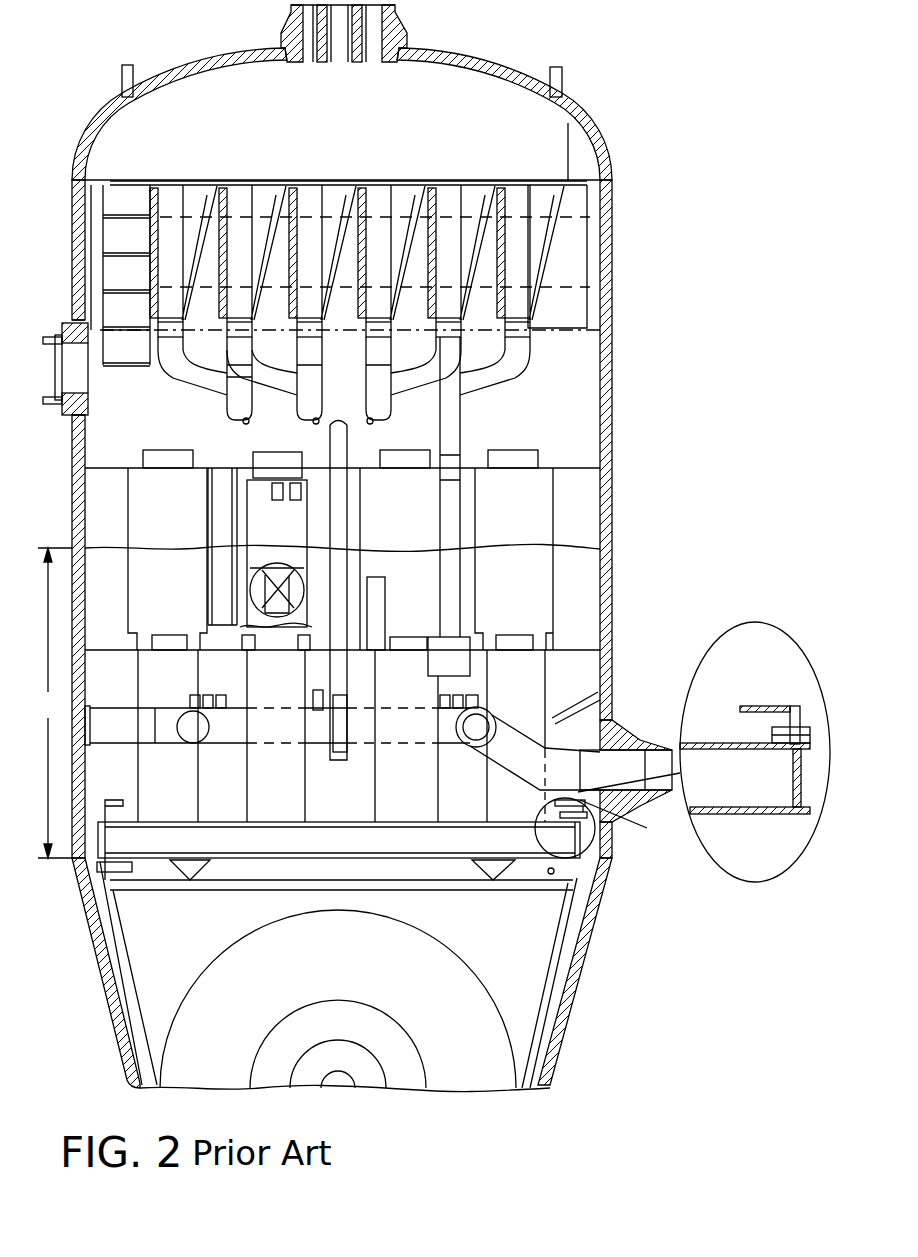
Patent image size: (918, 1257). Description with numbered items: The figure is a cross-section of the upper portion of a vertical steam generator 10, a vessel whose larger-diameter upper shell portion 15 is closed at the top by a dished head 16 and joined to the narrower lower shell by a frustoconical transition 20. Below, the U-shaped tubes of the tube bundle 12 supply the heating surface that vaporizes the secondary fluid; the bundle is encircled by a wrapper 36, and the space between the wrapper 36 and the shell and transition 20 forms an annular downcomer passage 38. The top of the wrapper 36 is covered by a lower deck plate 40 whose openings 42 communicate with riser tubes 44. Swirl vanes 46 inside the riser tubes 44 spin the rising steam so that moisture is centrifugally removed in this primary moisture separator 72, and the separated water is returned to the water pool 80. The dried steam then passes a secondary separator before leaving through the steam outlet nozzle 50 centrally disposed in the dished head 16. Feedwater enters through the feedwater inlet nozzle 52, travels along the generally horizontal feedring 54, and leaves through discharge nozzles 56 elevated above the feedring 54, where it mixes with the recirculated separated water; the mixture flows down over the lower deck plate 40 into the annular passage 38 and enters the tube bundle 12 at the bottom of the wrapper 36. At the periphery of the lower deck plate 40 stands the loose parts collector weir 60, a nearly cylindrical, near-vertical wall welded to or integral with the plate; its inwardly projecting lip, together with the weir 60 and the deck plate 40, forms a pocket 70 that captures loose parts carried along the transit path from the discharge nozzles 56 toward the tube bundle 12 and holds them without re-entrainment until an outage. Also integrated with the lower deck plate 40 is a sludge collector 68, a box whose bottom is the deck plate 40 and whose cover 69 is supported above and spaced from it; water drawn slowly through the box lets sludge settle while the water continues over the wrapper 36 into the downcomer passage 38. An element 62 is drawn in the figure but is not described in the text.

The steam generator 10 is at (393, 431).
The tube bundle 12 is at (468, 956).
The upper shell portion 15 is at (612, 503).
The dished head 16 is at (487, 62).
The frustoconical transition 20 is at (590, 965).
The wrapper 36 is at (568, 927).
The annular passage 38 is at (555, 995).
The lower deck plate 40 is at (578, 865).
The openings 42 is at (357, 878).
The riser tubes 44 is at (547, 663).
The swirl vanes 46 is at (243, 587).
The steam outlet nozzle 50 is at (407, 18).
The feedwater inlet nozzle 52 is at (625, 725).
The feedring 54 is at (392, 745).
The discharge nozzles 56 is at (440, 705).
The loose parts collector weir 60 is at (100, 812).
The connecting rod 62 is at (570, 793).
The sludge collector 68 is at (152, 862).
The cover 69 is at (520, 815).
The pocket 70 is at (756, 725).
The primary moisture separator 72 is at (556, 578).
The water pool 80 is at (52, 703).